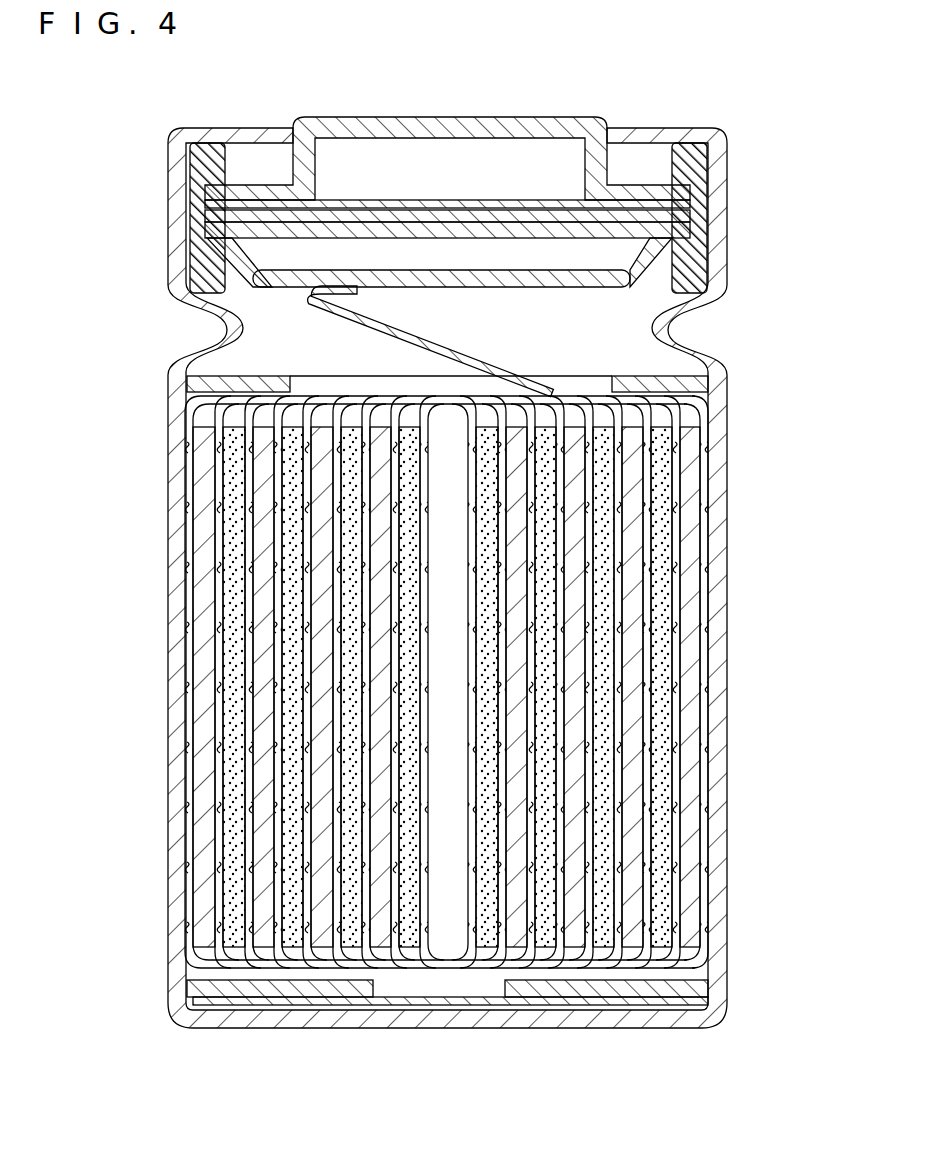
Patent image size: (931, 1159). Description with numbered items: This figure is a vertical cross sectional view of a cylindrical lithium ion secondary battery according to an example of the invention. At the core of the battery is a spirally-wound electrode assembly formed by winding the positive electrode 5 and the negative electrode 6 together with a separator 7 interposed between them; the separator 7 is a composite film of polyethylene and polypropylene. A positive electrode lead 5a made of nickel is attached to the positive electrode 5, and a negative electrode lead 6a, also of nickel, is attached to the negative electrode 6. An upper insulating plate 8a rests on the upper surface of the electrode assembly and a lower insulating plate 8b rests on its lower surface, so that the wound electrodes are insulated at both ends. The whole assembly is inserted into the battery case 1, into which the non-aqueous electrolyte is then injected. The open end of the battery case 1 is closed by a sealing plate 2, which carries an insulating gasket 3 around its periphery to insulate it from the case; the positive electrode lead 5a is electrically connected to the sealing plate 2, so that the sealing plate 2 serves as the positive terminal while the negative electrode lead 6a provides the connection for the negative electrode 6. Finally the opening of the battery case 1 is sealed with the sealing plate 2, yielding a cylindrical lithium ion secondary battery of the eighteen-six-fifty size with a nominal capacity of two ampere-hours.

The battery case 1 is at (180, 553).
The sealing plate 2 is at (368, 118).
The insulating gasket 3 is at (707, 208).
The positive electrode 5 is at (660, 780).
The positive electrode lead 5a is at (490, 372).
The negative electrode 6 is at (685, 725).
The negative electrode lead 6a is at (494, 1005).
The separator 7 is at (703, 613).
The upper insulating plate 8a is at (703, 387).
The lower insulating plate 8b is at (693, 990).